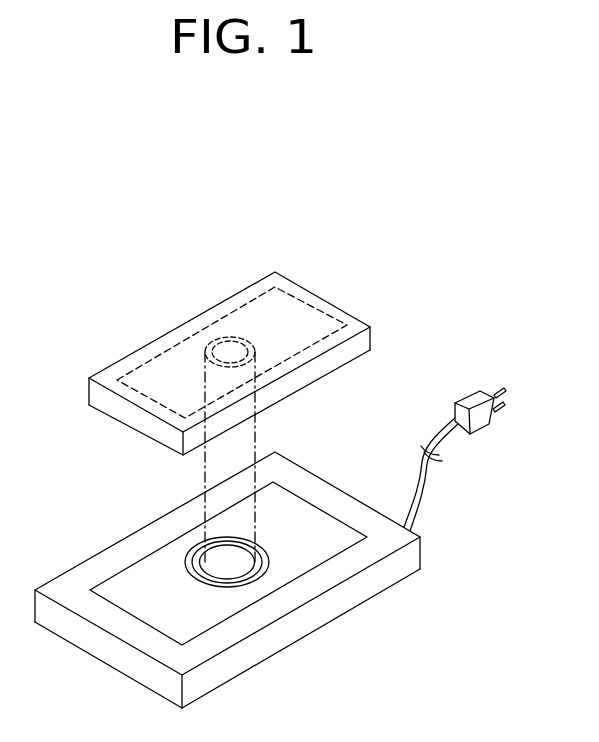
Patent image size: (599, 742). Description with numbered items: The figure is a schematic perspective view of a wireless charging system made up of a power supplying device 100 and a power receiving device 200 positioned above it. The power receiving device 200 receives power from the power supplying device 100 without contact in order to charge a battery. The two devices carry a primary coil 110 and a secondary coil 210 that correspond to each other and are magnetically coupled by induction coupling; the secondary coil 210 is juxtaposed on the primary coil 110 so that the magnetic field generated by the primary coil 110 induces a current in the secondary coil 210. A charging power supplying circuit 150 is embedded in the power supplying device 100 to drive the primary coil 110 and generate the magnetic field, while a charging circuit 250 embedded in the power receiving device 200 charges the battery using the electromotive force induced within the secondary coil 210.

The power supplying device 100 is at (433, 547).
The primary coil 110 is at (197, 548).
The charging power supplying circuit 150 is at (130, 560).
The power receiving device 200 is at (298, 258).
The secondary coil 210 is at (218, 340).
The charging circuit 250 is at (252, 300).